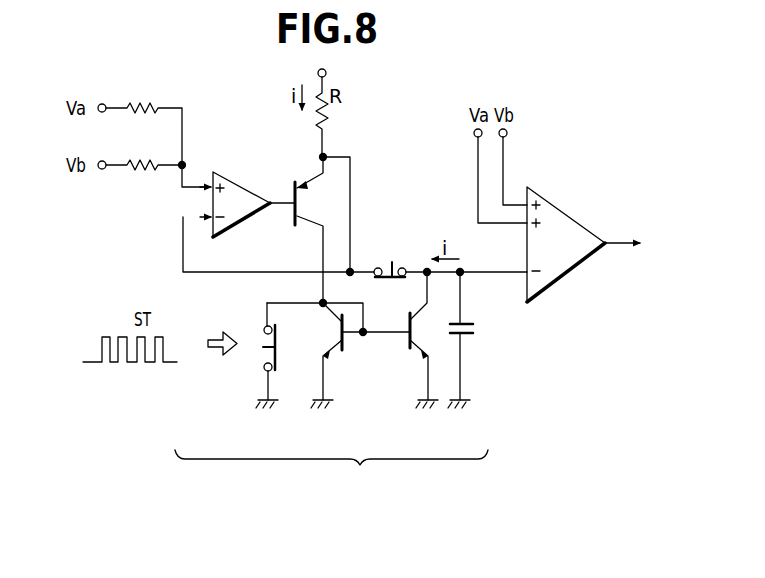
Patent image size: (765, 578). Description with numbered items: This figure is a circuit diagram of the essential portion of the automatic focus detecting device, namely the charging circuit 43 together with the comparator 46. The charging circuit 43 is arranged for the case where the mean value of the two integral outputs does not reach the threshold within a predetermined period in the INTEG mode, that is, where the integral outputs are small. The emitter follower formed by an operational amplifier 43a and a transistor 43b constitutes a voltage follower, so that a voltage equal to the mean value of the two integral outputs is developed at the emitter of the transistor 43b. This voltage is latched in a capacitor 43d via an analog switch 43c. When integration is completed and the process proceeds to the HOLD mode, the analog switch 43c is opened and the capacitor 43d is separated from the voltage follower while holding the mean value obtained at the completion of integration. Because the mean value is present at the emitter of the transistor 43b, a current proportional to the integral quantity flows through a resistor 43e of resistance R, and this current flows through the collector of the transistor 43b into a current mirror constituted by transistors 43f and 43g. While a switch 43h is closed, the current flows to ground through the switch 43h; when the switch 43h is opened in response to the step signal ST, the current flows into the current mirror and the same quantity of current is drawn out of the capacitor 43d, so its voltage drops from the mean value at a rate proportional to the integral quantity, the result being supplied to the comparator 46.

The charging circuit 43 is at (331, 471).
The operational amplifier 43a is at (237, 186).
The transistor 43b is at (293, 213).
The analog switch 43c is at (395, 263).
The capacitor 43d is at (470, 327).
The resistor 43e is at (327, 117).
The transistor 43f is at (347, 350).
The transistor 43g is at (408, 343).
The switch 43h is at (262, 356).
The comparator 46 is at (575, 260).